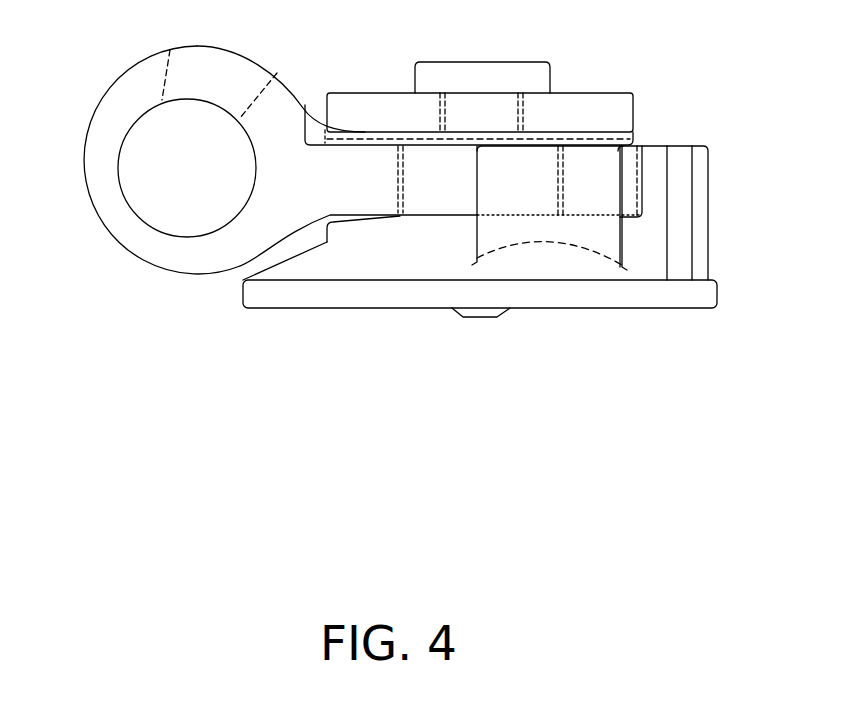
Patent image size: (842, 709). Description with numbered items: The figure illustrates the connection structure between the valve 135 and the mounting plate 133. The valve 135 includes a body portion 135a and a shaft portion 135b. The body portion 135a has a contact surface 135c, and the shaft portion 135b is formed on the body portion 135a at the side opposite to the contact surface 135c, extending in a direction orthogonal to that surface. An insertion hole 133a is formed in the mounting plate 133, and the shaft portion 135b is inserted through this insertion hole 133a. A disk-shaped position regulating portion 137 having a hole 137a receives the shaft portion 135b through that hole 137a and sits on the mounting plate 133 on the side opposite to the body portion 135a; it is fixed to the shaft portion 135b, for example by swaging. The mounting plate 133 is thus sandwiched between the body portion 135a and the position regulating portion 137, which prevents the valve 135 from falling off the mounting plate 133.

The mounting plate 133 is at (107, 90).
The insertion hole 133a is at (402, 190).
The valve 135 is at (777, 247).
The body portion 135a is at (718, 297).
The shaft portion 135b is at (563, 170).
The contact surface 135c is at (653, 310).
The position regulating portion 137 is at (633, 112).
The hole 137a is at (444, 112).